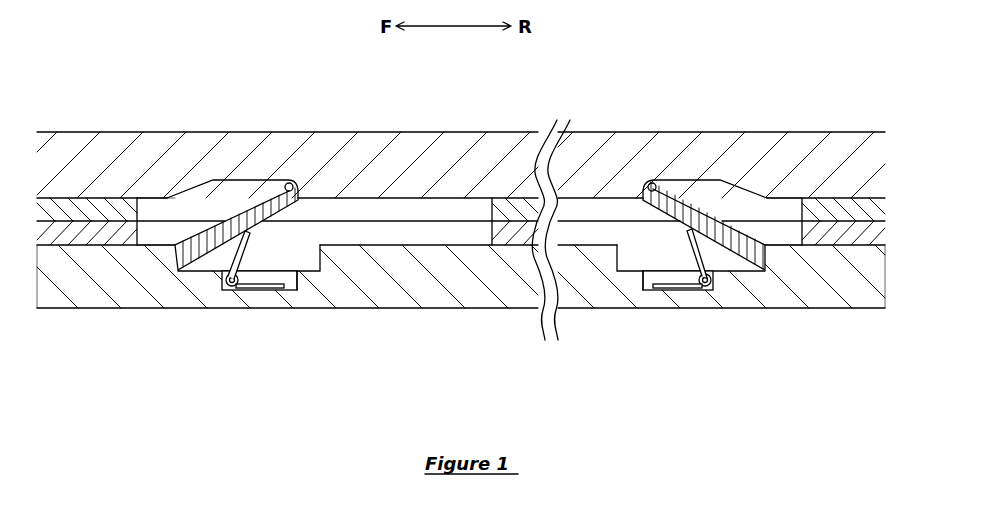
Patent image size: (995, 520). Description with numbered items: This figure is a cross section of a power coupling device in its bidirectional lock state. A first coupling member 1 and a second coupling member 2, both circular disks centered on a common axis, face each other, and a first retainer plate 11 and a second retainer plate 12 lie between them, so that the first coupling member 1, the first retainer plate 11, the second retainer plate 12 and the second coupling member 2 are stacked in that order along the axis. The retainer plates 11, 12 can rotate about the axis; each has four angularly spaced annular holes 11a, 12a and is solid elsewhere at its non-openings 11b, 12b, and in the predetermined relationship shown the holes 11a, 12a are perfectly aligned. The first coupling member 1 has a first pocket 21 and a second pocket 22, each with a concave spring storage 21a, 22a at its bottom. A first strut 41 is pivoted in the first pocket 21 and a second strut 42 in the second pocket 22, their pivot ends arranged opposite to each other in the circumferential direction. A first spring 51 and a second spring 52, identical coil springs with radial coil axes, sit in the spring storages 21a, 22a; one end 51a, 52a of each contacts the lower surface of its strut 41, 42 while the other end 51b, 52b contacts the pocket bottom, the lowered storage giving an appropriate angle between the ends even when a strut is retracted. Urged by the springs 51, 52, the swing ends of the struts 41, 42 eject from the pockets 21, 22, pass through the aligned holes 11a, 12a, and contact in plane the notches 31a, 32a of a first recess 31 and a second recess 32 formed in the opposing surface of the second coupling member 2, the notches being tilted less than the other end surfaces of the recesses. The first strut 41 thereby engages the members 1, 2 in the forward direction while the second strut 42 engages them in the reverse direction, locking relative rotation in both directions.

The first coupling member 1 is at (402, 296).
The second coupling member 2 is at (415, 150).
The first retainer plate 11 is at (513, 236).
The holes 11a is at (155, 233).
The non-openings 11b is at (72, 285).
The second retainer plate 12 is at (513, 212).
The holes 12a is at (155, 212).
The non-openings 12b is at (72, 208).
The first pocket 21 is at (322, 270).
The spring storage 21a is at (298, 286).
The second pocket 22 is at (622, 262).
The spring storage 22a is at (645, 289).
The first recess 31 is at (240, 186).
The notch 31a is at (280, 188).
The second recess 32 is at (705, 187).
The notch 32a is at (651, 186).
The first strut 41 is at (203, 262).
The second strut 42 is at (748, 262).
The first spring 51 is at (245, 288).
The one end 51a is at (242, 258).
The other end 51b is at (275, 290).
The second spring 52 is at (693, 260).
The one end 52a is at (720, 262).
The other end 52b is at (670, 290).